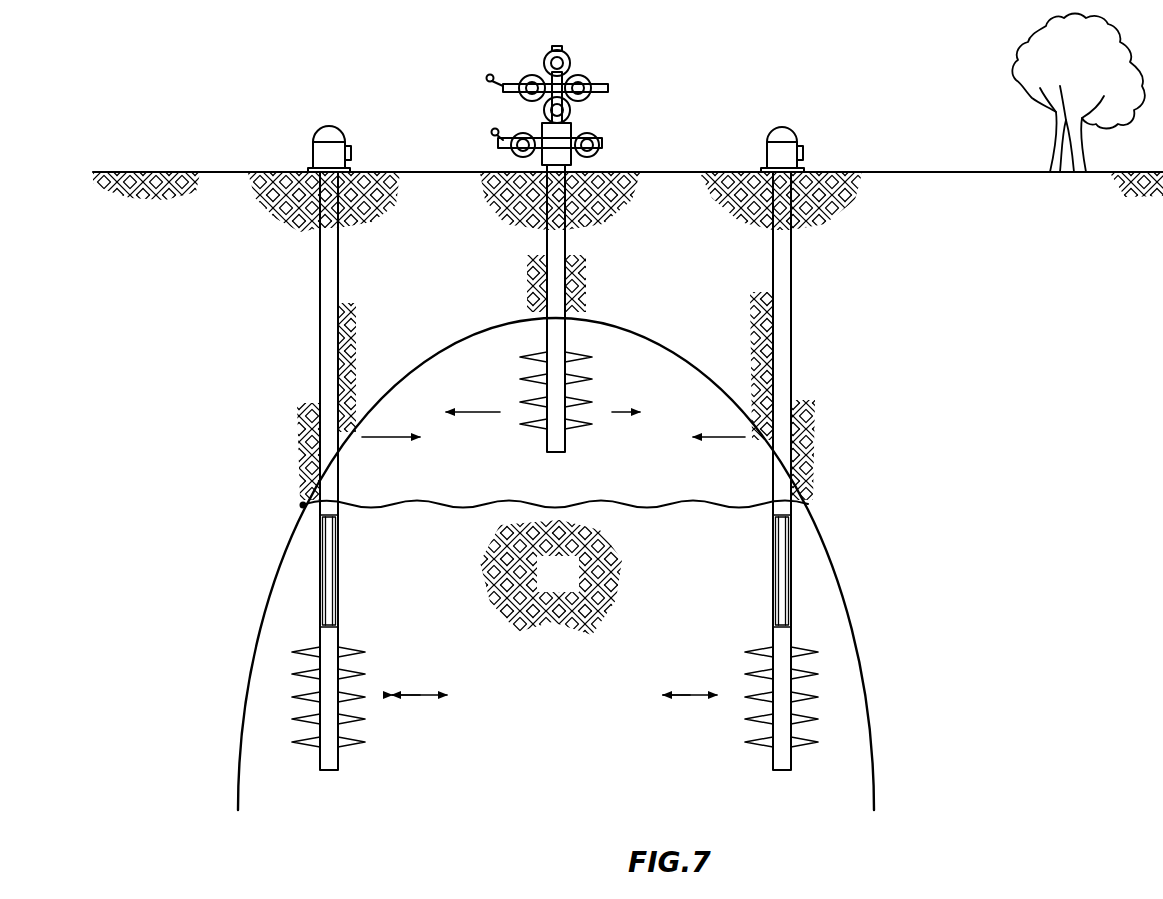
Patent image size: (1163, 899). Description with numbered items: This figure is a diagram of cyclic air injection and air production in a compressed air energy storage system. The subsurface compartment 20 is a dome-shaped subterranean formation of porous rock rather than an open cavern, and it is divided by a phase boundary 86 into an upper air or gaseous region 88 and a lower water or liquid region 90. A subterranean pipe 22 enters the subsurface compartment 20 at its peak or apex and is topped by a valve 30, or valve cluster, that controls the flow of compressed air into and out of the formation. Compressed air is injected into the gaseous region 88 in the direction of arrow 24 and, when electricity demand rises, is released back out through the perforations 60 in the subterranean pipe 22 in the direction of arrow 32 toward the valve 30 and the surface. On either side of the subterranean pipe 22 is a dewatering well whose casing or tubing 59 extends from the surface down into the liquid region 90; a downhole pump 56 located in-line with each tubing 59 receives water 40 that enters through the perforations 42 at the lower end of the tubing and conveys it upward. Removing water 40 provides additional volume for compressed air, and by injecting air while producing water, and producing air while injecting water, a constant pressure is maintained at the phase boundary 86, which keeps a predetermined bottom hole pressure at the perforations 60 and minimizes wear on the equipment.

The subsurface compartment 20 is at (571, 589).
The subterranean pipe 22 is at (566, 240).
The arrow 24 is at (470, 411).
The valve 30 is at (640, 100).
The arrow 32 is at (398, 438).
The water 40 is at (425, 697).
The perforations 42 is at (300, 719).
The downhole pump 56 is at (336, 563).
The tubing 59 is at (320, 325).
The perforations 60 is at (590, 379).
The phase boundary 86 is at (303, 505).
The gaseous region 88 is at (486, 466).
The liquid region 90 is at (407, 609).